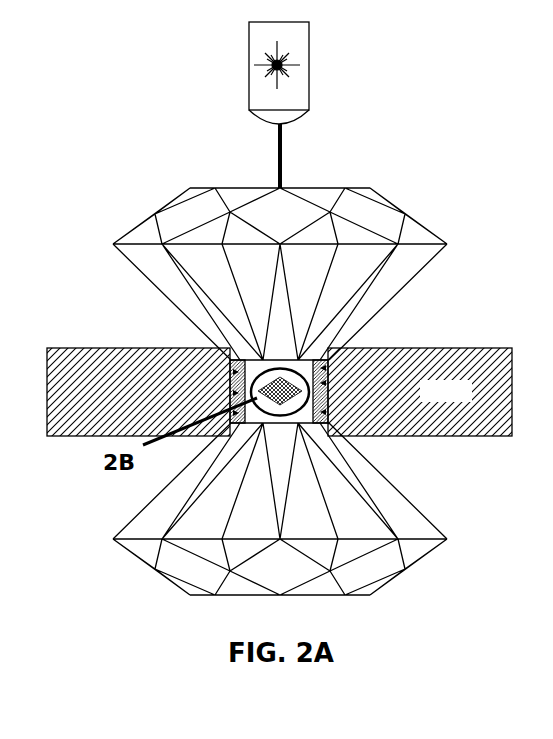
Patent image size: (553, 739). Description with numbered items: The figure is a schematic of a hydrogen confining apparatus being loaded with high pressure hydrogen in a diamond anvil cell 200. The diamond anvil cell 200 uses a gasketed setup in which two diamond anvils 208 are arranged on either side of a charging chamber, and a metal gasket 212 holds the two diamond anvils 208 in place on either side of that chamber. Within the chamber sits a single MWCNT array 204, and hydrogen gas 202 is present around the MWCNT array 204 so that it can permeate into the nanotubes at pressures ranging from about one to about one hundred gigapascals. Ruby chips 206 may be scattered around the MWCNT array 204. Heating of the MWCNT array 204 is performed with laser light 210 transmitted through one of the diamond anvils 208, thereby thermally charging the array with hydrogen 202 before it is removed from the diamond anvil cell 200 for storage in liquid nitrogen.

The diamond anvil cell 200 is at (103, 278).
The hydrogen gas 202 is at (330, 396).
The MWCNT array 204 is at (304, 413).
The ruby chips 206 is at (205, 350).
The diamond anvils 208 is at (304, 187).
The laser light 210 is at (275, 158).
The metal gasket 212 is at (460, 400).